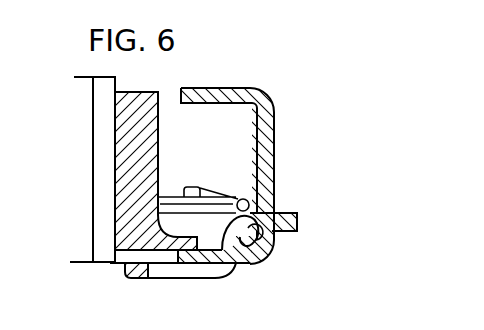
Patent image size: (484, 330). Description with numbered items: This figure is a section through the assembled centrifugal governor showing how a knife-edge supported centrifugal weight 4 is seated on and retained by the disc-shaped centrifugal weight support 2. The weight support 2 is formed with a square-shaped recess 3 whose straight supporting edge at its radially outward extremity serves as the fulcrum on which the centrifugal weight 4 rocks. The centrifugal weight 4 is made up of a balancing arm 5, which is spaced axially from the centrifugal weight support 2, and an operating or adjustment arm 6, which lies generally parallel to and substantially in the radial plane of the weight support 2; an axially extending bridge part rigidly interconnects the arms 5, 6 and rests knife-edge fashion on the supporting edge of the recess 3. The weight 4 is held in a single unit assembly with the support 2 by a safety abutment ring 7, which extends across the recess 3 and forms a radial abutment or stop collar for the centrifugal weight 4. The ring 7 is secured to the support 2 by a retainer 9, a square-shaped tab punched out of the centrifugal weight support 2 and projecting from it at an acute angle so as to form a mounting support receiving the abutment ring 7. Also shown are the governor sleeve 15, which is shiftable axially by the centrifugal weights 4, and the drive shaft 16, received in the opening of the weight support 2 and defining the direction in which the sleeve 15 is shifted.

The centrifugal weight support 2 is at (302, 219).
The recess 3 is at (260, 265).
The centrifugal weight 4 is at (276, 253).
The balancing arm 5 is at (231, 97).
The adjustment arm 6 is at (232, 268).
The safety abutment ring 7 is at (242, 198).
The retainer 9 is at (195, 186).
The governor sleeve 15 is at (133, 215).
The drive shaft 16 is at (95, 243).